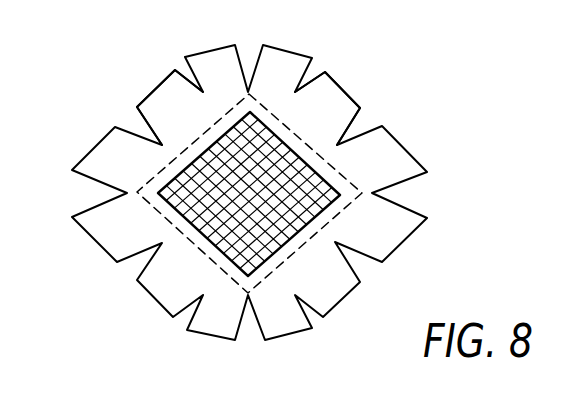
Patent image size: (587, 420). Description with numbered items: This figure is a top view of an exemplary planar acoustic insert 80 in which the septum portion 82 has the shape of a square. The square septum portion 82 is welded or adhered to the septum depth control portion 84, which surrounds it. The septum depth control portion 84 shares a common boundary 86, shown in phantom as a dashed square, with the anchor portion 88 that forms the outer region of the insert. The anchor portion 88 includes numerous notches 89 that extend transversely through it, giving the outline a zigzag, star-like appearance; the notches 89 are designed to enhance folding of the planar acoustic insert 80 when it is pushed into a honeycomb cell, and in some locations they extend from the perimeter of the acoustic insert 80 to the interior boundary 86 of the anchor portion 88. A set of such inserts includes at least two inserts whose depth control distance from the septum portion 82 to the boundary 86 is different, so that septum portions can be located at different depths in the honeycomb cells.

The planar acoustic insert 80 is at (327, 92).
The septum portion 82 is at (207, 212).
The septum depth control portion 84 is at (153, 202).
The common boundary 86 is at (272, 275).
The anchor portion 88 is at (173, 102).
The notches 89 is at (362, 120).